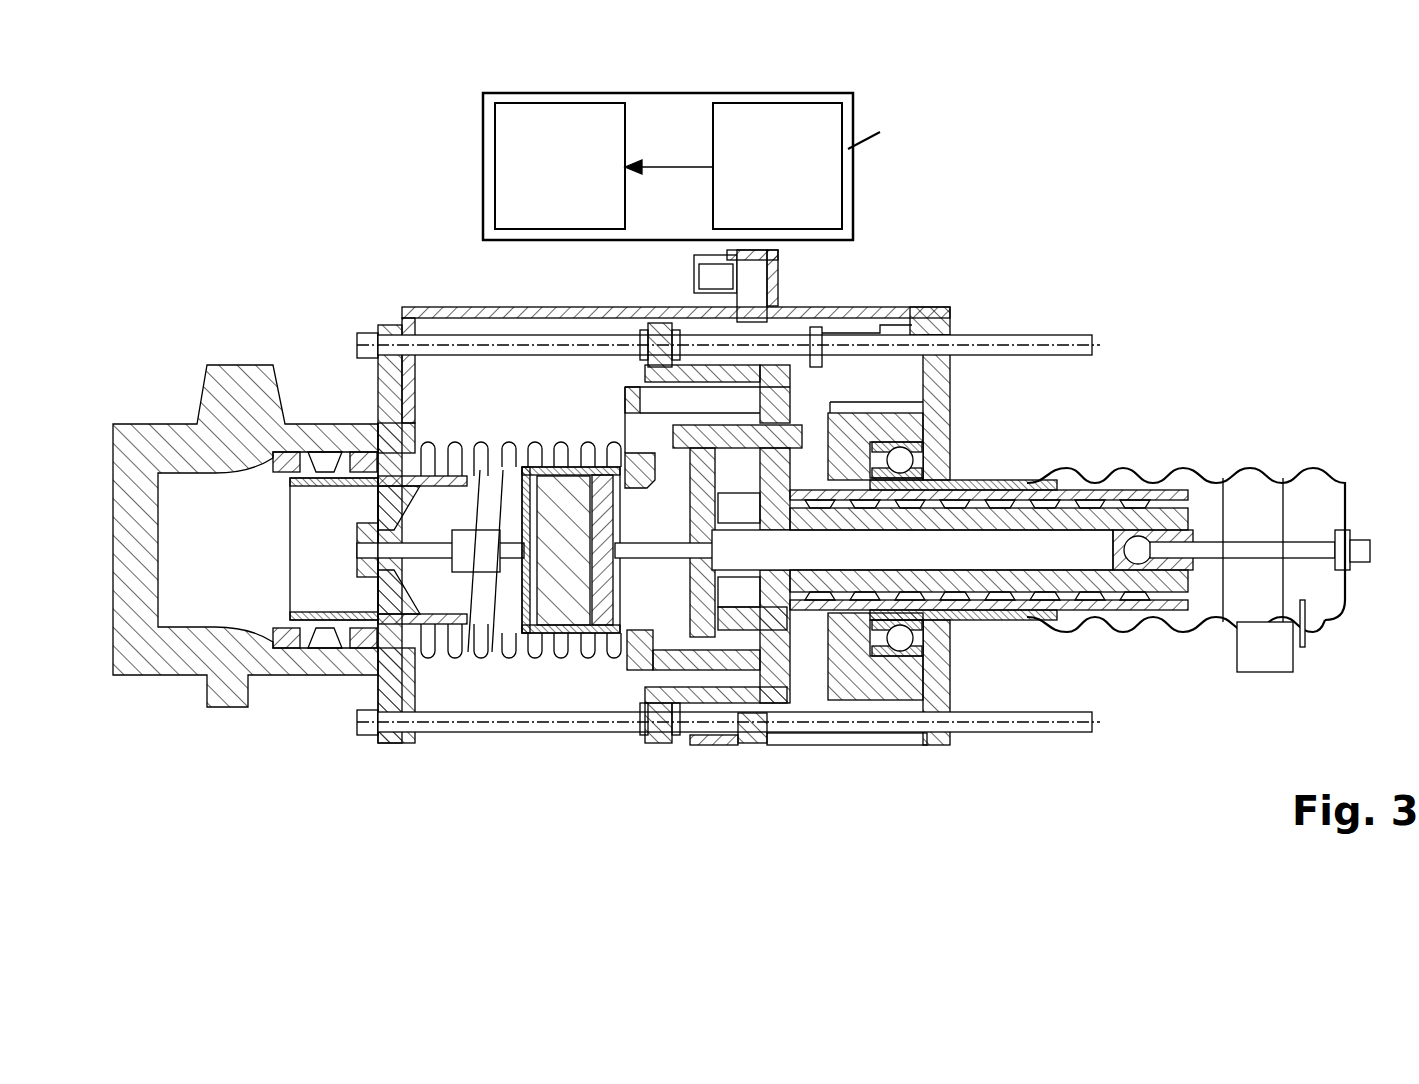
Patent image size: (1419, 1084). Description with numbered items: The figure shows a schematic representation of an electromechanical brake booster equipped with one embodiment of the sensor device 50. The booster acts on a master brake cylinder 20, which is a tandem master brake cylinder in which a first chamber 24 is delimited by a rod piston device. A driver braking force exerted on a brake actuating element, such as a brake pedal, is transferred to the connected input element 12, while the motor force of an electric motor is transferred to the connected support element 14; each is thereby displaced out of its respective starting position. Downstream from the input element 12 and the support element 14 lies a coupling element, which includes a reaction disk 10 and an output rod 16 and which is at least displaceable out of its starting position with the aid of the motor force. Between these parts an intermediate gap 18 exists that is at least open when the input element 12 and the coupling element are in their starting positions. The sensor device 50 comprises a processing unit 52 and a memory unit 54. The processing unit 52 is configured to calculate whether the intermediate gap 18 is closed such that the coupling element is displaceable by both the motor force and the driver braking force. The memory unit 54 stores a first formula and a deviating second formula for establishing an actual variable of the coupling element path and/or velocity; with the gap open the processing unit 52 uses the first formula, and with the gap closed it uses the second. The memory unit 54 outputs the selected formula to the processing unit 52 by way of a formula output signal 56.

The reaction disk 10 is at (573, 630).
The input element 12 is at (707, 550).
The support element 14 is at (1003, 585).
The output rod 16 is at (425, 555).
The intermediate gap 18 is at (571, 578).
The master brake cylinder 20 is at (170, 668).
The first chamber 24 is at (177, 562).
The sensor device 50 is at (672, 93).
The processing unit 52 is at (564, 103).
The memory unit 54 is at (790, 103).
The formula output signal 56 is at (669, 166).